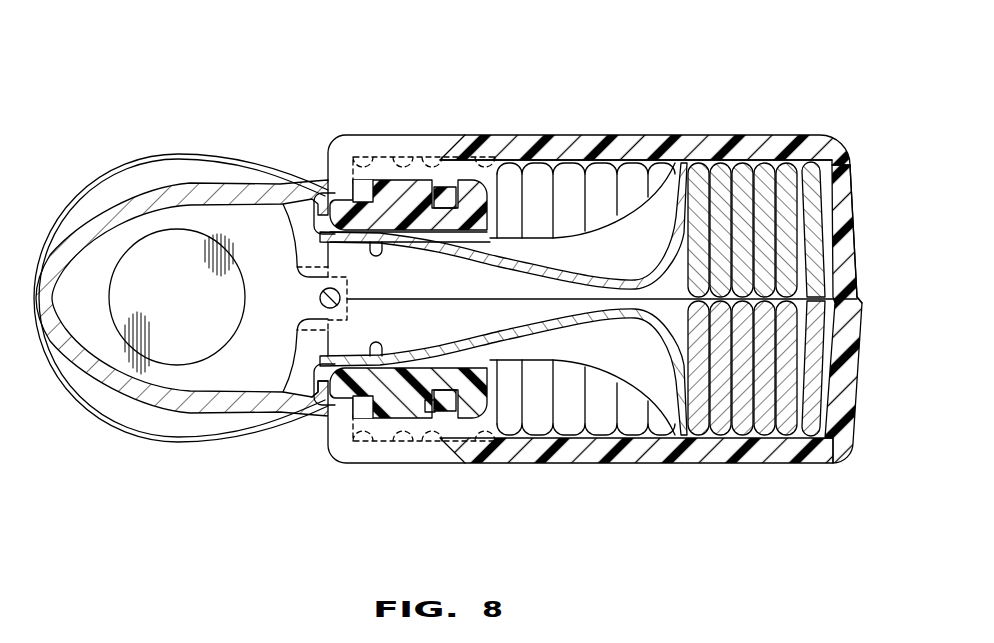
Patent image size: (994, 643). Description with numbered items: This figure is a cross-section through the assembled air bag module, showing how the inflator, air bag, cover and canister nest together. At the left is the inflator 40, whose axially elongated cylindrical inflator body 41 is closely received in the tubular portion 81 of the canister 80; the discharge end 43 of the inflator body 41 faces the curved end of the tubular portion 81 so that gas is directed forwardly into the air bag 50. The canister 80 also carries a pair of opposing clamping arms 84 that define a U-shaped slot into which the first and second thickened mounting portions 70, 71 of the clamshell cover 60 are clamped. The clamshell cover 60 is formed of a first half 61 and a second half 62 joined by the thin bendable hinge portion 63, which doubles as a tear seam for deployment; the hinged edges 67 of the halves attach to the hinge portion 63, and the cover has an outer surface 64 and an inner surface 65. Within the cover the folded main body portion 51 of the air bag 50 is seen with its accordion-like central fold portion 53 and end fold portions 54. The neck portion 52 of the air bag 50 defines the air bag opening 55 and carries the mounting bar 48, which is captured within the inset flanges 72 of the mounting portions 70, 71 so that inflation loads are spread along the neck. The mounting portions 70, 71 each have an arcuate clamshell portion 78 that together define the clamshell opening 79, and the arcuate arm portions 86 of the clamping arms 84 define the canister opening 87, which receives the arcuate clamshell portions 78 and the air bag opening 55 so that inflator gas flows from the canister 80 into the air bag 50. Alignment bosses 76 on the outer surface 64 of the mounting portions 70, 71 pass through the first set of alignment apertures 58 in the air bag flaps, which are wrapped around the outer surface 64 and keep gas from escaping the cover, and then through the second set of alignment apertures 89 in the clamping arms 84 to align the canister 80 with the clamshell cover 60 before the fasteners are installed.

The inflator 40 is at (191, 258).
The inflator body 41 is at (234, 214).
The discharge end 43 is at (174, 235).
The mounting bar 48 is at (312, 203).
The air bag 50 is at (808, 178).
The main body portion 51 is at (759, 180).
The neck portion 52 is at (499, 262).
The central fold portion 53 is at (742, 243).
The end fold portions 54 is at (540, 168).
The air bag opening 55 is at (386, 248).
The first set of alignment apertures 58 is at (372, 157).
The clamshell cover 60 is at (597, 277).
The first half 61 is at (758, 473).
The second half 62 is at (796, 133).
The hinge portion 63 is at (858, 302).
The outer surface 64 is at (700, 134).
The inner surface 65 is at (650, 180).
The hinged edges 67 is at (851, 160).
The first thickened mounting portion 70 is at (320, 384).
The second thickened mounting portion 71 is at (411, 238).
The inset flanges 72 is at (310, 323).
The alignment bosses 76 is at (398, 291).
The arcuate clamshell portion 78 is at (352, 204).
The clamshell opening 79 is at (322, 333).
The canister 80 is at (123, 165).
The tubular portion 81 is at (88, 177).
The clamping arms 84 is at (450, 176).
The arcuate arm portion 86 is at (326, 222).
The canister opening 87 is at (362, 413).
The second set of alignment apertures 89 is at (428, 412).